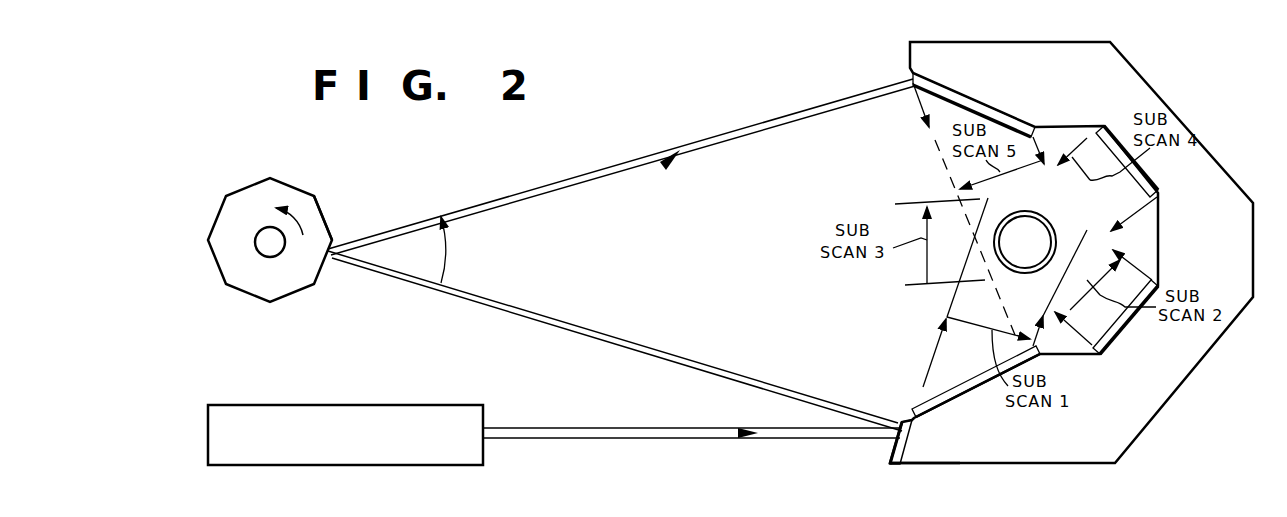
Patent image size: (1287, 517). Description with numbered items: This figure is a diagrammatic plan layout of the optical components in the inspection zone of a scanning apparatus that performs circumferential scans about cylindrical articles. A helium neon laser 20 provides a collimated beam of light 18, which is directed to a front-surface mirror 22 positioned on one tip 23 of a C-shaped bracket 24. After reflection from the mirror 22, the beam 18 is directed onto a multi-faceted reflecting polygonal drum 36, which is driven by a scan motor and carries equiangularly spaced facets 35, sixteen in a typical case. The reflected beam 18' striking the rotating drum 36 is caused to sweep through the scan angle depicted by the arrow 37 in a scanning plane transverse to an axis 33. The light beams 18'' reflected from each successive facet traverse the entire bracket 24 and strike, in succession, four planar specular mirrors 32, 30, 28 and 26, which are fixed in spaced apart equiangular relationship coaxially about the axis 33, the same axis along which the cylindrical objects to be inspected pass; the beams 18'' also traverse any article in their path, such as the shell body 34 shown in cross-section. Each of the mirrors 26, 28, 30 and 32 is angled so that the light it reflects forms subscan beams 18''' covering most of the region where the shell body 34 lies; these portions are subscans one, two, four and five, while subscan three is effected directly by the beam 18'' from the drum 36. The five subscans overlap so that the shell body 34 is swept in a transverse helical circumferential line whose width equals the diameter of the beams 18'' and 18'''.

The collimated beam 18 is at (691, 417).
The reflected beam 18' is at (615, 341).
The light beams reflected from drum faces 18'' is at (621, 167).
The subscan beams 18''' is at (951, 237).
The helium neon laser 20 is at (293, 405).
The front-surface mirror 22 is at (890, 452).
The tip of C-shaped bracket 23 is at (918, 467).
The C-shaped bracket 24 is at (1190, 371).
The planar specular reflecting mirror 26 is at (1002, 108).
The planar specular reflecting mirror 28 is at (1153, 178).
The planar specular reflecting mirror 30 is at (1113, 342).
The planar specular reflecting mirror 32 is at (945, 405).
The axis 33 is at (1025, 242).
The shell body 34 is at (1022, 210).
The facets 35 is at (245, 293).
The polygonal drum 36 is at (326, 201).
The scan angle arrow 37 is at (446, 252).